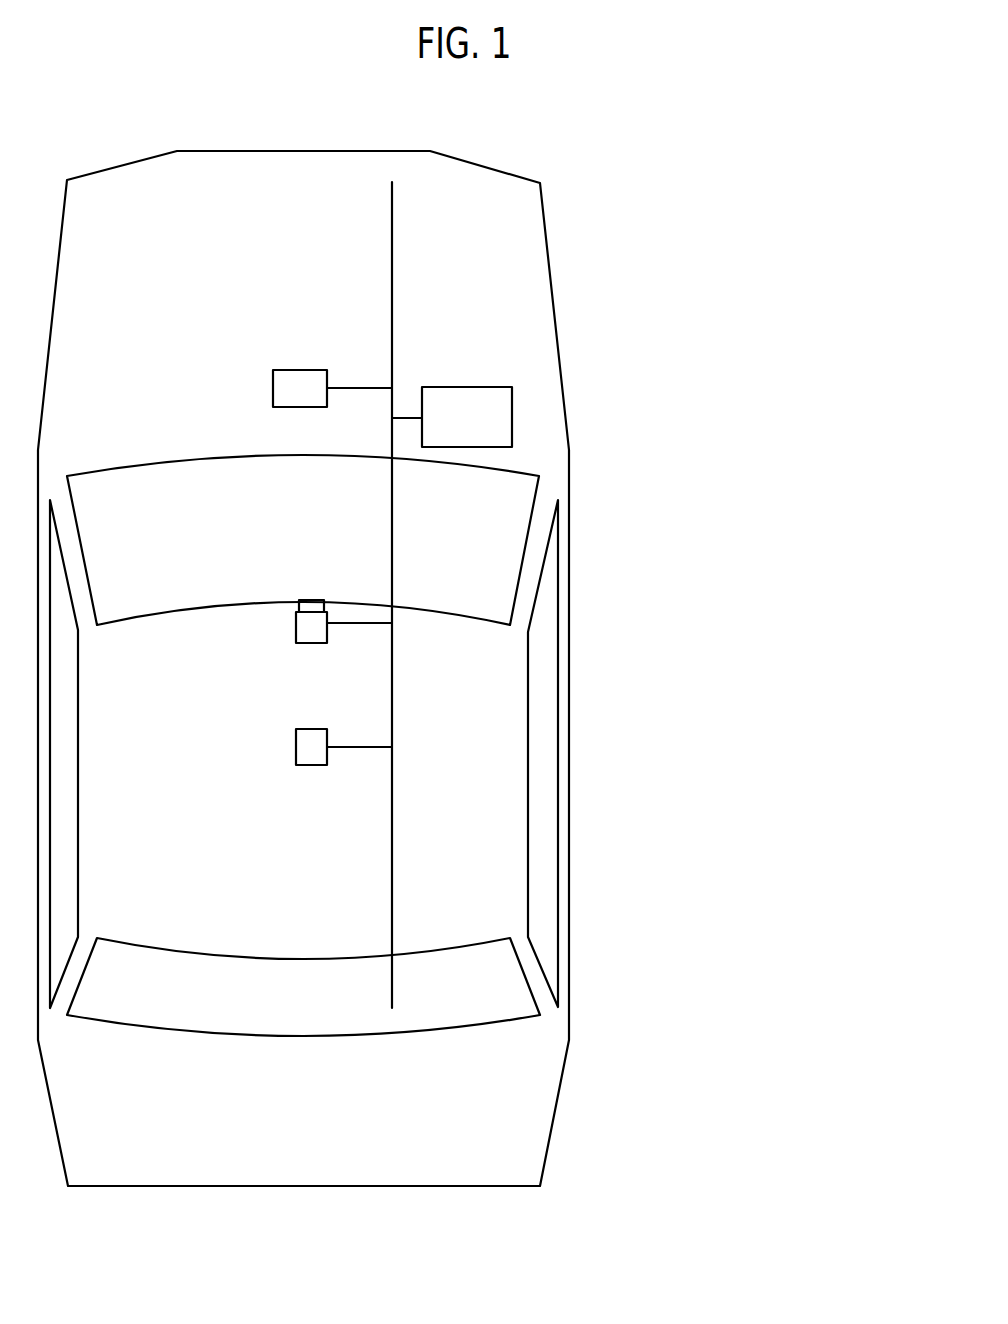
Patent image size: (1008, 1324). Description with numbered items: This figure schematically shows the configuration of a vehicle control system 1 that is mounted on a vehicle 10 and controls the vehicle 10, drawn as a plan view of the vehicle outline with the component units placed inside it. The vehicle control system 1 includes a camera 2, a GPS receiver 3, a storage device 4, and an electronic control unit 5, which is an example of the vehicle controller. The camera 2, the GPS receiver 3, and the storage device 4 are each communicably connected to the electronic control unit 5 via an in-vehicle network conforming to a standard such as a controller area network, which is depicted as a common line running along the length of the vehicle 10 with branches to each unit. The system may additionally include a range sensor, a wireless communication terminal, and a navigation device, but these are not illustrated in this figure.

The vehicle control system 1 is at (465, 668).
The vehicle 10 is at (569, 1017).
The camera 2 is at (295, 630).
The GPS receiver 3 is at (295, 750).
The storage device 4 is at (273, 390).
The electronic control unit 5 is at (512, 418).